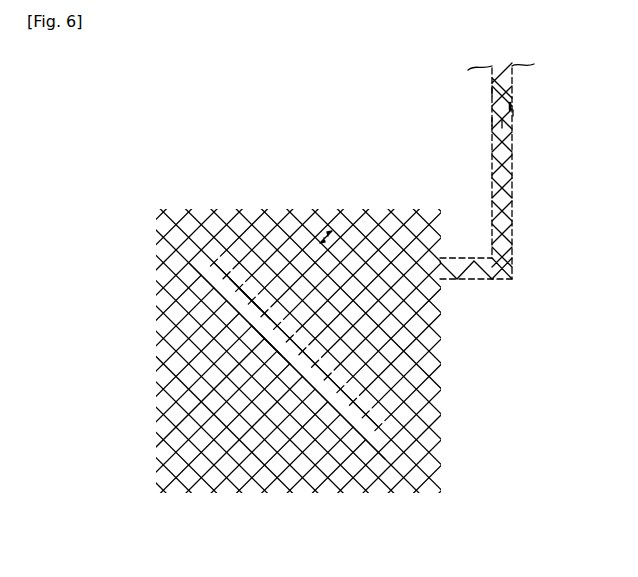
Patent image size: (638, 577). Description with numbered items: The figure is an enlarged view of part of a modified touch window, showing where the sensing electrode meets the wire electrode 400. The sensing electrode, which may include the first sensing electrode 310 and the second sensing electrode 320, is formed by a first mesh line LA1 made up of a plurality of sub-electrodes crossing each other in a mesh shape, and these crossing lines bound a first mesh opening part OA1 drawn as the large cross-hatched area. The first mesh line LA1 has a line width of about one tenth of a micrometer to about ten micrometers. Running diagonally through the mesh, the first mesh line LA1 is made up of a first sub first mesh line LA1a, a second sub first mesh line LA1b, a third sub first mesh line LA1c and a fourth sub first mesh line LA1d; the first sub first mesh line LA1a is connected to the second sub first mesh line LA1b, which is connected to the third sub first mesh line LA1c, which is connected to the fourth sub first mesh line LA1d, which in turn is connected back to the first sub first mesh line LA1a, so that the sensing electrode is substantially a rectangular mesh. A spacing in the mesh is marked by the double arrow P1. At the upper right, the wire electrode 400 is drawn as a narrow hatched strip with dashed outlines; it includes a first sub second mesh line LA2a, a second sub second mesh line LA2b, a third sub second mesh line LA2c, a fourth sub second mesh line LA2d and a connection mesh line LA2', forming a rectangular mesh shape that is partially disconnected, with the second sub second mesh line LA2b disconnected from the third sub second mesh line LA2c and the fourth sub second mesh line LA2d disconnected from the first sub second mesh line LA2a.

The first mesh opening part OA1 is at (247, 468).
The first mesh line LA1 is at (72, 260).
The first sub first mesh line LA1a is at (168, 303).
The second sub first mesh line LA1b is at (193, 329).
The third sub first mesh line LA1c is at (193, 329).
The fourth sub first mesh line LA1d is at (162, 352).
The second sensing electrode 320 is at (247, 268).
The first sensing electrode 310 is at (399, 248).
The pitch P1 is at (318, 232).
The wire electrode 400 is at (512, 89).
The first sub second mesh line LA2a is at (497, 92).
The second sub second mesh line LA2b is at (514, 101).
The third sub second mesh line LA2c is at (505, 125).
The fourth sub second mesh line LA2d is at (497, 123).
The connection mesh line LA2' is at (544, 123).